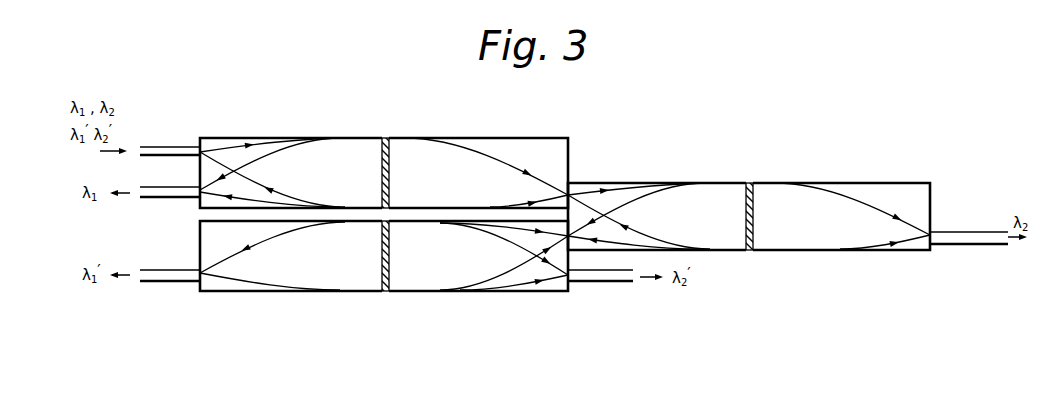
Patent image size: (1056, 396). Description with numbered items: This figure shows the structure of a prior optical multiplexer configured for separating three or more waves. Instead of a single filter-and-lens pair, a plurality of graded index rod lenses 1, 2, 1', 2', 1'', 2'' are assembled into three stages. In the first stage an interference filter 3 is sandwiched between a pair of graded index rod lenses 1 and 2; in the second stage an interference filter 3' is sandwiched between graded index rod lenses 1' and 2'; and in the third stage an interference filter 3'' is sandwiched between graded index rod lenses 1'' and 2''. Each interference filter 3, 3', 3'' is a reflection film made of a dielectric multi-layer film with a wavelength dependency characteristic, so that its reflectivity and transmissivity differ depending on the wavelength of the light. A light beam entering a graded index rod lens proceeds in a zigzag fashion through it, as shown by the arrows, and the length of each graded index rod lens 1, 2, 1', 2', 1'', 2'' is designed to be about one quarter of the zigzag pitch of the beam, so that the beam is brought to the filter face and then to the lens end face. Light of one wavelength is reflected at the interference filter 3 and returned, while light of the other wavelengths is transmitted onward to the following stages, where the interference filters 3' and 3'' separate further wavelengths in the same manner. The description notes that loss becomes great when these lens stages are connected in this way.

The graded index rod lens 1 is at (291, 152).
The interference filter 3 is at (385, 156).
The graded index rod lens 2 is at (478, 152).
The graded index rod lens 1' is at (291, 276).
The interference filter 3' is at (387, 272).
The graded index rod lens 2' is at (478, 276).
The graded index rod lens 1'' is at (657, 196).
The interference filter 3'' is at (751, 197).
The graded index rod lens 2'' is at (841, 197).